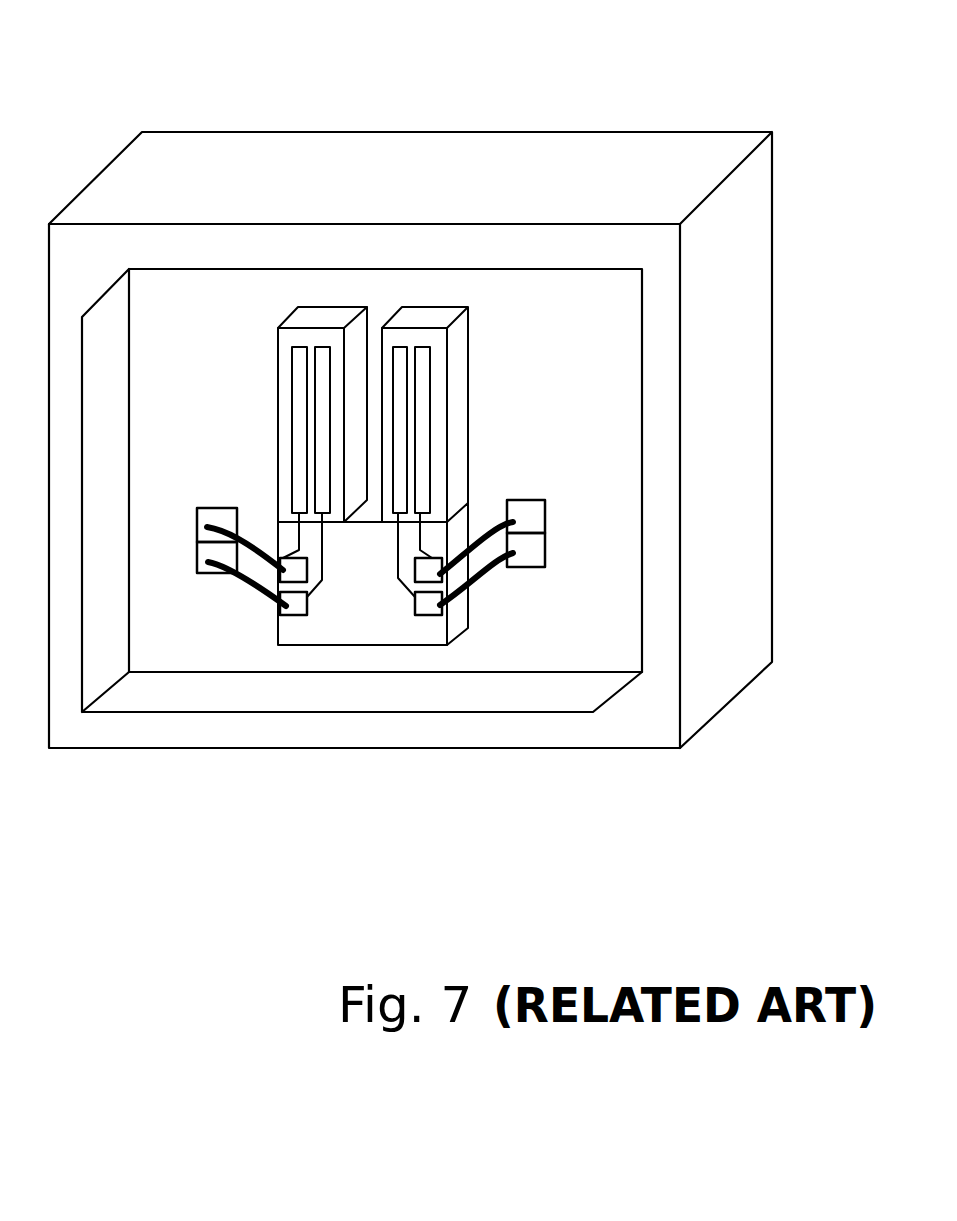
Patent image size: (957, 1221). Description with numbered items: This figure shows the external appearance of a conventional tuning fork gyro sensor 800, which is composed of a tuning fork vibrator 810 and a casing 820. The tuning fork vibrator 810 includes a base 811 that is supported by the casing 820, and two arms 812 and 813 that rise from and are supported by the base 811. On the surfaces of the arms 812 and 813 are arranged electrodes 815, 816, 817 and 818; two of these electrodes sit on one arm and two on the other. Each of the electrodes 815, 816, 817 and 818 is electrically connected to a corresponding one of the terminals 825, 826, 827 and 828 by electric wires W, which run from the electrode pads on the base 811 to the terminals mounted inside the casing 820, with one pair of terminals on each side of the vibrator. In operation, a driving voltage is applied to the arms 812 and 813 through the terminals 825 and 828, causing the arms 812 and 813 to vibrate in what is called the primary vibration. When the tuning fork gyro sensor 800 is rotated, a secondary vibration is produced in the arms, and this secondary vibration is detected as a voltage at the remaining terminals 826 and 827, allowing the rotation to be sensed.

The tuning fork gyro sensor 800 is at (111, 102).
The tuning fork vibrator 810 is at (232, 280).
The base 811 is at (358, 630).
The arm 812 is at (470, 332).
The arm 813 is at (277, 342).
The electrode 815 is at (293, 347).
The electrode 816 is at (320, 350).
The electrode 817 is at (397, 347).
The electrode 818 is at (422, 350).
The casing 820 is at (472, 148).
The terminal 825 is at (213, 517).
The terminal 826 is at (208, 563).
The terminal 827 is at (533, 552).
The terminal 828 is at (532, 512).
The electric wire W is at (262, 596).